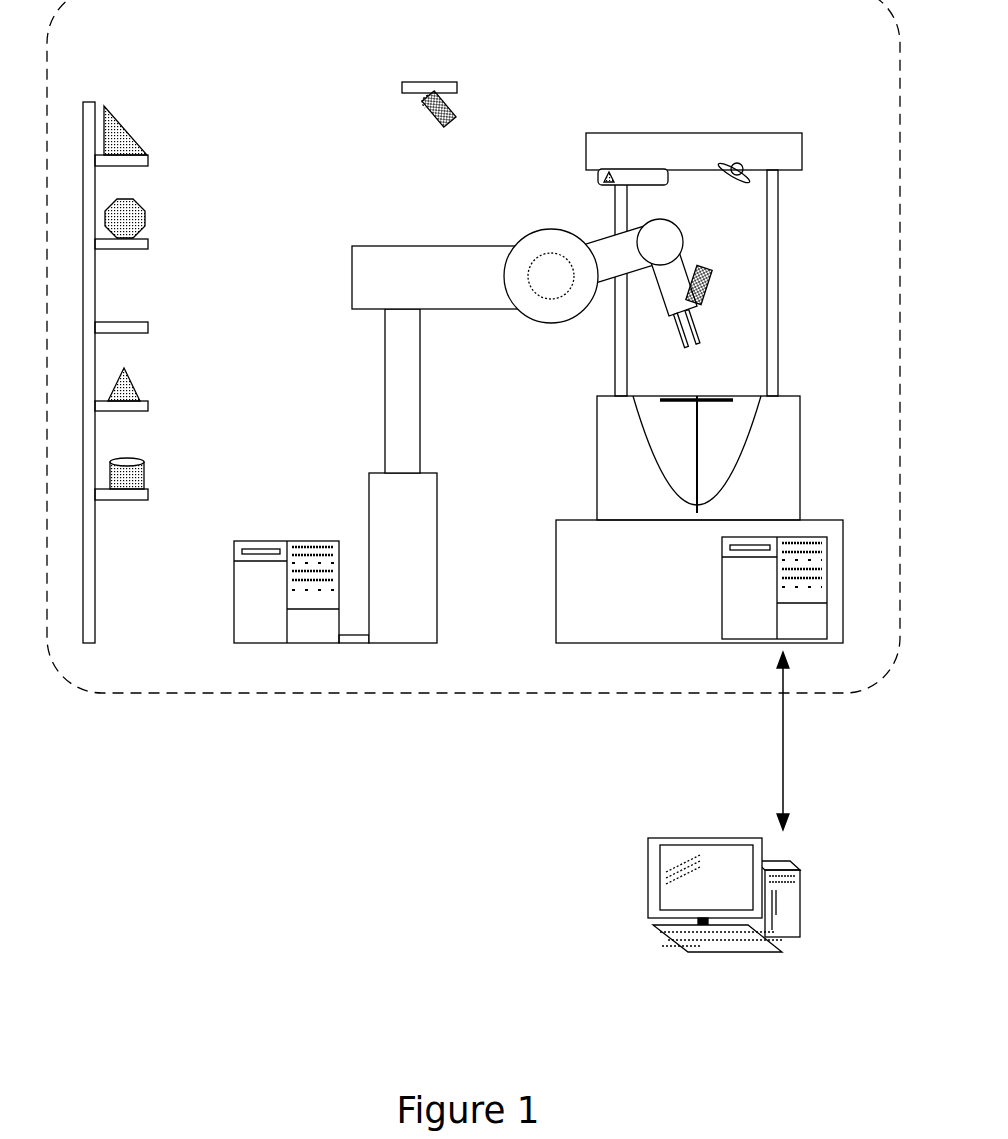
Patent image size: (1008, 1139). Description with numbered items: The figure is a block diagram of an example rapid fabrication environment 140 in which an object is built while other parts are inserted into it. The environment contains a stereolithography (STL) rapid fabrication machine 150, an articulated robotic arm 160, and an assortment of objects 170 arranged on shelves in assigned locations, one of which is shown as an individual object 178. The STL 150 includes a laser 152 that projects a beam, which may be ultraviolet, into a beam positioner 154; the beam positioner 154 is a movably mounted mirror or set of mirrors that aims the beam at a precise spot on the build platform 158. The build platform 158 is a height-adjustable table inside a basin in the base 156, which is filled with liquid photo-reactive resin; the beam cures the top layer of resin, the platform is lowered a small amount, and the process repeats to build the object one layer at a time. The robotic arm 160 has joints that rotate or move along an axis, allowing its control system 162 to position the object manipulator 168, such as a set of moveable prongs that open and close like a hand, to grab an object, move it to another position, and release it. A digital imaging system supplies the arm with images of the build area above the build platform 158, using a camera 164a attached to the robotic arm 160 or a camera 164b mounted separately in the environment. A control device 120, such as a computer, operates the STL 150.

The control device 120 is at (835, 924).
The rapid fabrication environment 140 is at (185, 694).
The stereolithography (STL) rapid fabrication machine 150 is at (610, 621).
The laser 152 is at (596, 178).
The beam positioner 154 is at (727, 160).
The base 156 is at (803, 410).
The build platform 158 is at (720, 397).
The robotic arm 160 is at (296, 262).
The control system 162 is at (232, 600).
The camera 164a is at (710, 290).
The camera 164b is at (458, 110).
The object manipulator 168 is at (700, 333).
The objects 170 is at (102, 92).
The object 178 is at (149, 466).